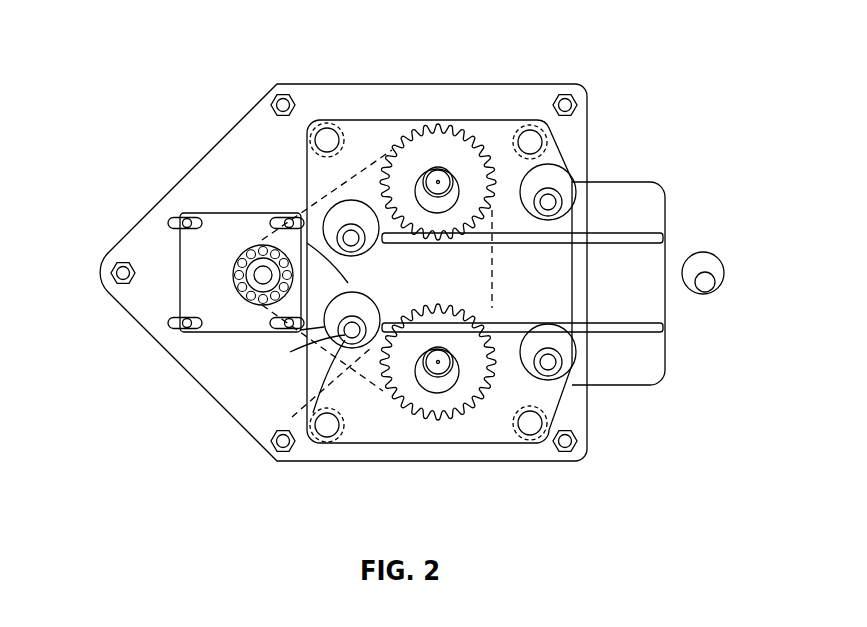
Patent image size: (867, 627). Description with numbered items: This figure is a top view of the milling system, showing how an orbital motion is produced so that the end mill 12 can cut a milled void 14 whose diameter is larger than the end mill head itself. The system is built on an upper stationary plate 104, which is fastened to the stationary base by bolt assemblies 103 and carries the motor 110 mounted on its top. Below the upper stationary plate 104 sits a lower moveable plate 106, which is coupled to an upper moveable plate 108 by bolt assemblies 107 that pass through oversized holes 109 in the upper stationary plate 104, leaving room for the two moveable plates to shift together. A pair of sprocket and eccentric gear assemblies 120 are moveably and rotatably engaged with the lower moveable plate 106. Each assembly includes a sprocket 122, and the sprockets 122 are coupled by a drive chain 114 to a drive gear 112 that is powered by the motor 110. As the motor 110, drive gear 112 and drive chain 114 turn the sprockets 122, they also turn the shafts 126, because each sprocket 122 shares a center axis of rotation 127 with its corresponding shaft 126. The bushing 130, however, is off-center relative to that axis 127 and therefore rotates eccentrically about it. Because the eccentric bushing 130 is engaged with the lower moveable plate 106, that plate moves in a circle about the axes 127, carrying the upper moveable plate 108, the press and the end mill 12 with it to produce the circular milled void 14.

The end mill 12 is at (706, 283).
The milled void 14 is at (703, 252).
The bolt assemblies 103 is at (572, 96).
The upper stationary plate 104 is at (216, 378).
The lower moveable plate 106 is at (495, 142).
The bolt assemblies 107 is at (345, 345).
The upper moveable plate 108 is at (643, 192).
The oversized holes 109 is at (337, 330).
The motor 110 is at (197, 255).
The drive gear 112 is at (263, 245).
The drive chain 114 is at (292, 417).
The sprocket and eccentric gear assemblies 120 is at (478, 272).
The sprockets 122 is at (435, 153).
The shafts 126 is at (443, 370).
The center axis of rotation 127 is at (438, 185).
The bushing 130 is at (380, 225).